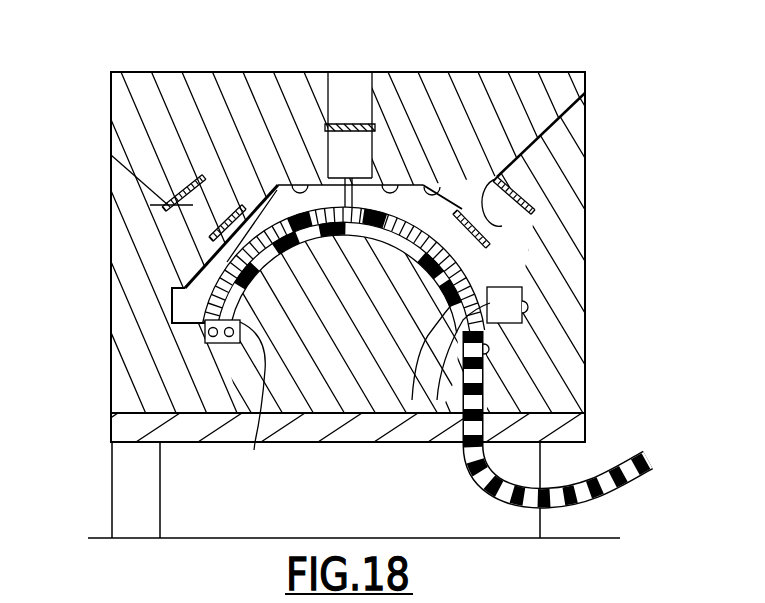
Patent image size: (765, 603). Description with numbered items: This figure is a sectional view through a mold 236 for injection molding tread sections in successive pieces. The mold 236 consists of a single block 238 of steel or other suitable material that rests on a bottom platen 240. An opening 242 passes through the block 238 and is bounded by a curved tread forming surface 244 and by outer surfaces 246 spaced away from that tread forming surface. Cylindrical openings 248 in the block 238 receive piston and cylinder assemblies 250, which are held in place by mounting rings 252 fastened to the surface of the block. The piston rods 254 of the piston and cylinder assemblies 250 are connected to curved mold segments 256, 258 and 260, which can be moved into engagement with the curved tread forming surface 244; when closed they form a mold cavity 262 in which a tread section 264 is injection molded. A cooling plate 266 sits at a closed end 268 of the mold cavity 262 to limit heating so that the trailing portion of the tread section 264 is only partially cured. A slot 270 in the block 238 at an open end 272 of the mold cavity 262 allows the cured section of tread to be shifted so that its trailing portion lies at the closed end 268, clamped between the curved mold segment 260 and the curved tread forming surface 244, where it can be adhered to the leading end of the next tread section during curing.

The mold 236 is at (596, 77).
The block 238 is at (575, 276).
The bottom platen 240 is at (115, 425).
The opening 242 is at (526, 316).
The curved tread forming surface 244 is at (175, 268).
The outer surfaces 246 is at (215, 180).
The cylindrical openings 248 is at (130, 105).
The piston and cylinder assemblies 250 is at (350, 122).
The mounting rings 252 is at (318, 72).
The piston rods 254 is at (378, 175).
The curved mold segment 256 is at (215, 260).
The curved mold segment 258 is at (273, 190).
The curved mold segment 260 is at (487, 362).
The mold cavity 262 is at (222, 322).
The tread section 264 is at (412, 400).
The cooling plate 266 is at (250, 345).
The closed end 268 is at (254, 450).
The slot 270 is at (489, 352).
The open end 272 is at (437, 400).